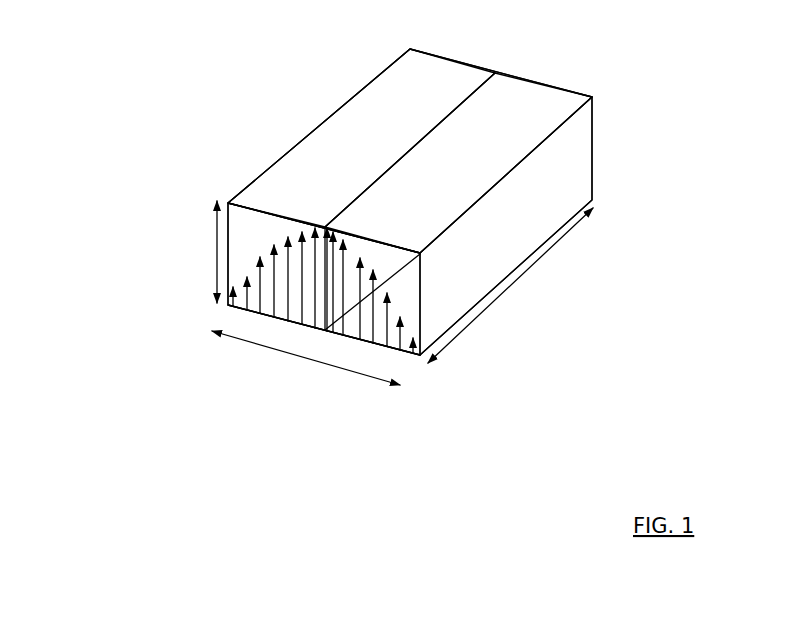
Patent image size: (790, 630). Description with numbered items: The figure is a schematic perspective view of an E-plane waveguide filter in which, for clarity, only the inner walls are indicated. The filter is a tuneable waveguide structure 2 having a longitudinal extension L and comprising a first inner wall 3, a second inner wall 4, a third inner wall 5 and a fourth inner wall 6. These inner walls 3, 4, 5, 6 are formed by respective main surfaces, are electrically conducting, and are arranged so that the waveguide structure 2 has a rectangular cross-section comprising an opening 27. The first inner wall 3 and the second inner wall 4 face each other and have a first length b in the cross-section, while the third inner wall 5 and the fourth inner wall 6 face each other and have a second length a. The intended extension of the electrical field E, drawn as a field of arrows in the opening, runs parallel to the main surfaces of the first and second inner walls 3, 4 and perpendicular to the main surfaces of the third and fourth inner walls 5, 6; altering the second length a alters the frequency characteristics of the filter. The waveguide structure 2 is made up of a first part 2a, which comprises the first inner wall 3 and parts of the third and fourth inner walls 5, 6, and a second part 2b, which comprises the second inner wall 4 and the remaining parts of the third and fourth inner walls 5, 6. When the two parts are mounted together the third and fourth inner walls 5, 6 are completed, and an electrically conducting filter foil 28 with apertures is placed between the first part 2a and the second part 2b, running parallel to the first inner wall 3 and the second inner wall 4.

The tuneable waveguide structure 2 is at (180, 132).
The first inner wall 3 is at (258, 228).
The second inner wall 4 is at (575, 172).
The third inner wall 5 is at (392, 112).
The fourth inner wall 6 is at (385, 357).
The first part 2a is at (333, 177).
The second part 2b is at (535, 112).
The opening 27 is at (381, 256).
The filter foil 28 is at (379, 257).
The electrical field E is at (310, 246).
The second length a is at (306, 358).
The first length b is at (206, 252).
The longitudinal extension L is at (510, 285).